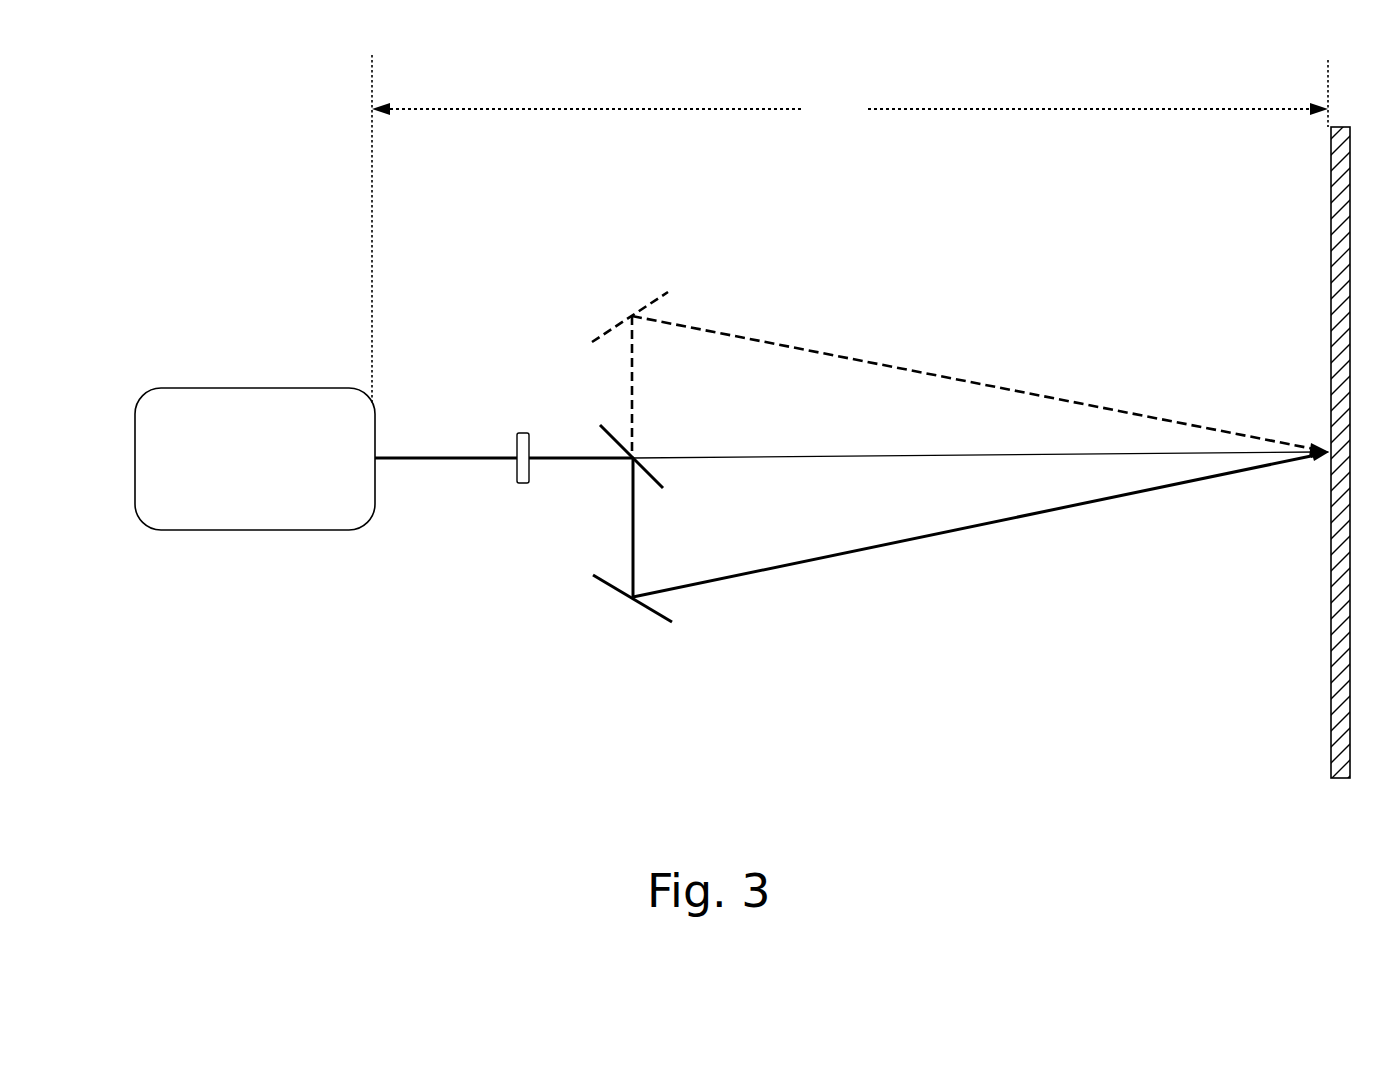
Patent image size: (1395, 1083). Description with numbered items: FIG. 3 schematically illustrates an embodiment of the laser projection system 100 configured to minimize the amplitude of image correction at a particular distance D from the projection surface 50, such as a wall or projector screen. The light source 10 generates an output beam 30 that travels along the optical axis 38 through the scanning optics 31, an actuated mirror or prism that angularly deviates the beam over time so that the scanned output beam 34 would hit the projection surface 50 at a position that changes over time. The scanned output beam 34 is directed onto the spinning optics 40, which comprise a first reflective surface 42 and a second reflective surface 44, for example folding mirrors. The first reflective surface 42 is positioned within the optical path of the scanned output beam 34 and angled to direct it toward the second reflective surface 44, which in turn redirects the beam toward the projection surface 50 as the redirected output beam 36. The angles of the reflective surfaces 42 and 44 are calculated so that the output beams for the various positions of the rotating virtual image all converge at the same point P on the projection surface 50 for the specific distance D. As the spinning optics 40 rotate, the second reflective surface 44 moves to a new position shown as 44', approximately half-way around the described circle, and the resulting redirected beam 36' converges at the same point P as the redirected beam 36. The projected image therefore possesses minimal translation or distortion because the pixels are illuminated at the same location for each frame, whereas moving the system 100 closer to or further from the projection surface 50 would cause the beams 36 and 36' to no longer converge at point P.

The laser projection system 100 is at (296, 172).
The light source 10 is at (166, 382).
The output beam 30 is at (398, 457).
The scanning optics 31 is at (525, 483).
The spinning optics 40 is at (510, 346).
The first reflective surface 42 is at (648, 458).
The scanned output beam 34 is at (577, 460).
The second reflective surface 44 is at (634, 640).
The second reflective surface at new position 44' is at (619, 355).
The redirected output beam 36 is at (981, 535).
The redirected beam 36' is at (980, 378).
The optical axis 38 is at (780, 456).
The point P is at (1328, 458).
The distance D is at (850, 230).
The projection surface 50 is at (1340, 778).